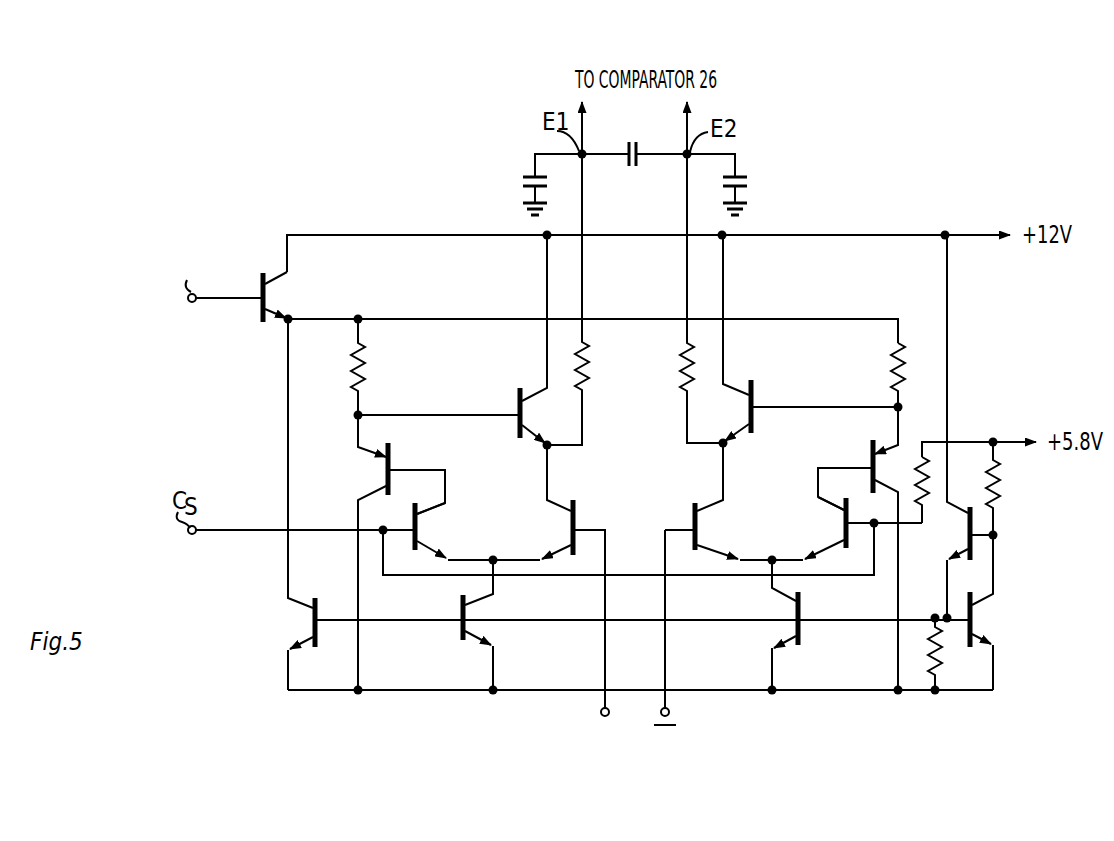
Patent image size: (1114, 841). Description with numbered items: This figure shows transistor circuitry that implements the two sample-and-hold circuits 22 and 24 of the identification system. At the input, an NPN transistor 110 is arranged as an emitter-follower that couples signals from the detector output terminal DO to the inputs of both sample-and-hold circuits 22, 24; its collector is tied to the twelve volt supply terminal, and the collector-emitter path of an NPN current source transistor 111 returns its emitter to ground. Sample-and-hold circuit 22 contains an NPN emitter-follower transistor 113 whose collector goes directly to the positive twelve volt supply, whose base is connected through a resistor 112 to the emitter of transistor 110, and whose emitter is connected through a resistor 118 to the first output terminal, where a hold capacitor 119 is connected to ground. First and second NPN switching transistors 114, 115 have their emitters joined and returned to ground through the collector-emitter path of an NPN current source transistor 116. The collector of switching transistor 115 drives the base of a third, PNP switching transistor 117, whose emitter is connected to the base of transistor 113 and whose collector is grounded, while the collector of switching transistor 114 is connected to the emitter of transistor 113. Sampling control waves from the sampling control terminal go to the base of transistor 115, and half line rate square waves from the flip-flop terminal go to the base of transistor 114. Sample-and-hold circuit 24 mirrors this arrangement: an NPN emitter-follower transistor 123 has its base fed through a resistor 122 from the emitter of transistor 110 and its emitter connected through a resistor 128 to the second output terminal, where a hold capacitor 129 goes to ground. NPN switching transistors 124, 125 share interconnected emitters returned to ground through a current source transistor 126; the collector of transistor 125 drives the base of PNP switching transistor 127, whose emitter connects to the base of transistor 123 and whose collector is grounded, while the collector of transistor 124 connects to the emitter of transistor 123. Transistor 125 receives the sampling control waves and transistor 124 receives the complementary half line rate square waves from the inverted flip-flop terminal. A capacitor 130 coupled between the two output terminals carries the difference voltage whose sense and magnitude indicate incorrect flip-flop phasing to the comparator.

The NPN transistor 110 is at (258, 282).
The NPN current source transistor 111 is at (317, 602).
The resistor 112 is at (366, 372).
The NPN transistor 113 is at (517, 398).
The first NPN switching transistor 114 is at (581, 512).
The second NPN switching transistor 115 is at (429, 494).
The NPN current source transistor 116 is at (460, 610).
The third switching transistor 117 is at (392, 458).
The resistor 118 is at (590, 360).
The hold capacitor 119 is at (521, 182).
The resistor 122 is at (896, 378).
The NPN transistor 123 is at (753, 400).
The NPN switching transistor 124 is at (692, 508).
The NPN switching transistor 125 is at (849, 511).
The current source transistor 126 is at (804, 613).
The PNP switching transistor 127 is at (871, 450).
The resistor 128 is at (686, 378).
The hold capacitor 129 is at (752, 184).
The capacitor 130 is at (633, 170).
The sample-and-hold circuit 22 is at (506, 507).
The sample-and-hold circuit 24 is at (787, 510).